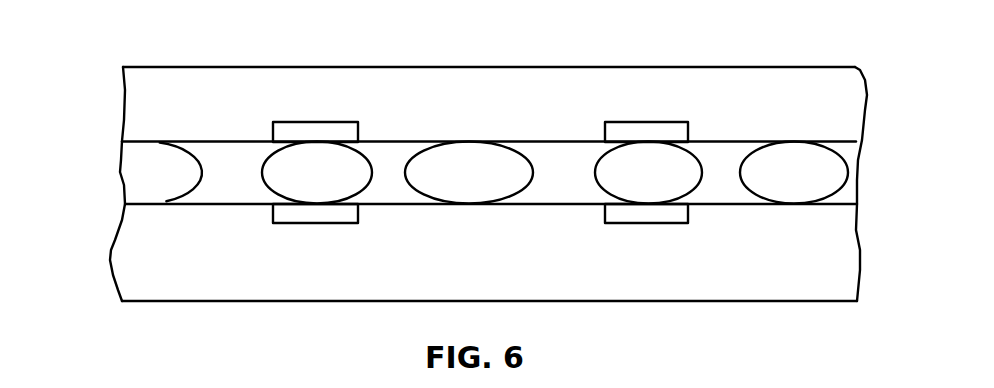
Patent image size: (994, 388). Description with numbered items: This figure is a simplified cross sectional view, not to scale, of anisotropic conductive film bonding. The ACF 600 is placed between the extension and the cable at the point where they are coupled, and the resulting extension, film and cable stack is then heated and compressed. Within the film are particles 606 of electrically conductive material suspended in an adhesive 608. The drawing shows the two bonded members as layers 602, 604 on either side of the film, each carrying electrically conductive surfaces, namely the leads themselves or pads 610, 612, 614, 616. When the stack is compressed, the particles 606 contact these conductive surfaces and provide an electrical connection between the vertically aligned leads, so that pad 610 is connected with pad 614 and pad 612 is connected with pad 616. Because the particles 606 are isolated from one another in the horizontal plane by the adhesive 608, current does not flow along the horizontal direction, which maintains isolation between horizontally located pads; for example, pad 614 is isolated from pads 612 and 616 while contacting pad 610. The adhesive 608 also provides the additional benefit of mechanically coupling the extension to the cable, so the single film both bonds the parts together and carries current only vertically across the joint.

The ACF 600 is at (121, 172).
The lower substrate layer 602 is at (563, 302).
The upper substrate layer 604 is at (413, 67).
The particles 606 is at (490, 153).
The adhesive 608 is at (847, 153).
The electrically conductive surface 610 is at (330, 223).
The electrically conductive surface 612 is at (662, 223).
The electrically conductive surface 614 is at (673, 122).
The electrically conductive surface 616 is at (297, 122).